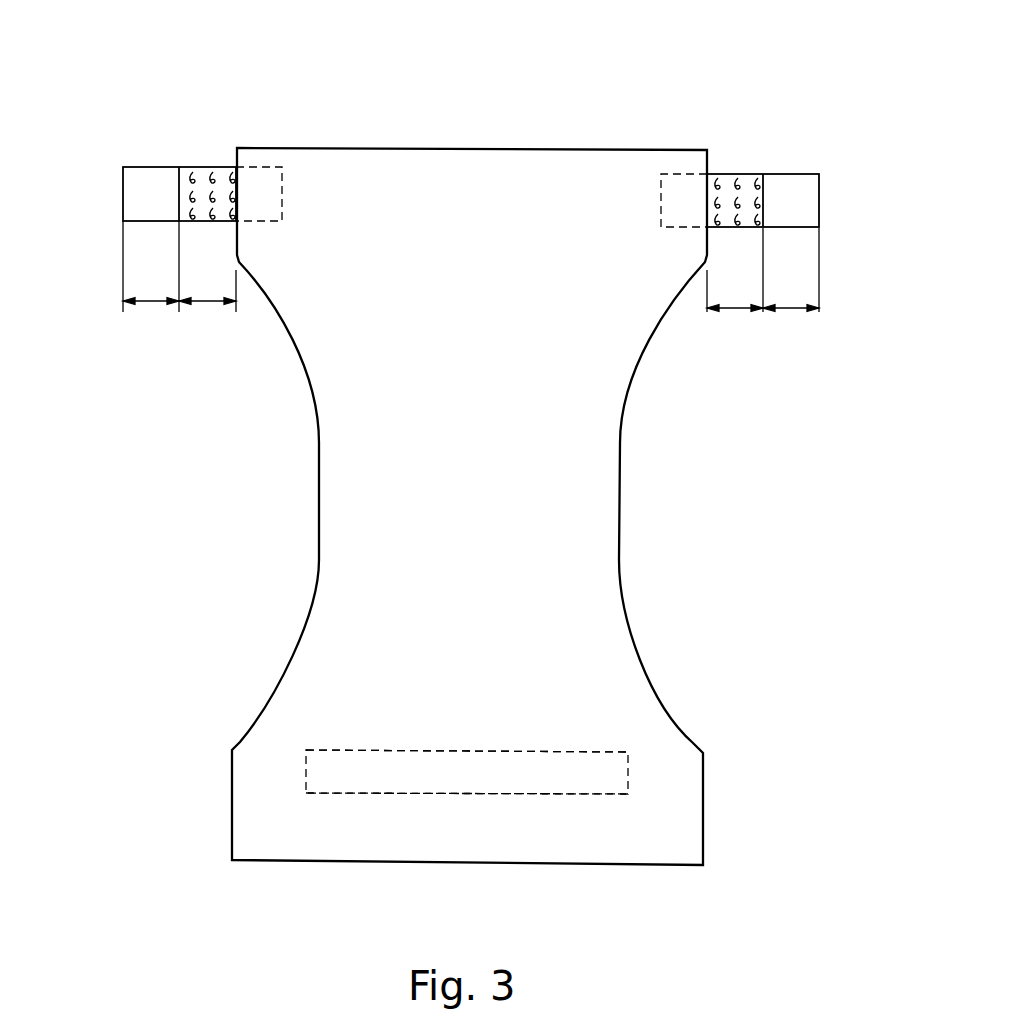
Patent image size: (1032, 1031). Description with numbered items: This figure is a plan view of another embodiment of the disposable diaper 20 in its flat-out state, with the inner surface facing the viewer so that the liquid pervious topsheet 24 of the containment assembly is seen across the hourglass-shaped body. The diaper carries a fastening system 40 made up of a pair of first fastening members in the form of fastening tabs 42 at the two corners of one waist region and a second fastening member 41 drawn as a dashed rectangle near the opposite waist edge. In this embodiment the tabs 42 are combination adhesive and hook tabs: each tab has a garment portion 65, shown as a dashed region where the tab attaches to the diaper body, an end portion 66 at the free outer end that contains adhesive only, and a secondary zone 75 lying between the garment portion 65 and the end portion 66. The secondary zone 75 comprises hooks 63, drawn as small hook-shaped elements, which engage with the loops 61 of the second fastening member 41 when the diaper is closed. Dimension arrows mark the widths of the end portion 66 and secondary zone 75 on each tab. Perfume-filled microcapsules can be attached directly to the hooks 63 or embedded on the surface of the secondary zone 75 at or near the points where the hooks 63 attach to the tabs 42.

The diaper 20 is at (368, 78).
The liquid pervious topsheet 24 is at (485, 377).
The fastening system 40 is at (410, 795).
The second fastening member 41 is at (512, 795).
The fastening tabs 42 is at (170, 168).
The loops 61 is at (453, 790).
The hooks 63 is at (230, 170).
The garment portions 65 is at (263, 165).
The end portions 66 is at (150, 303).
The secondary zone 75 is at (207, 303).